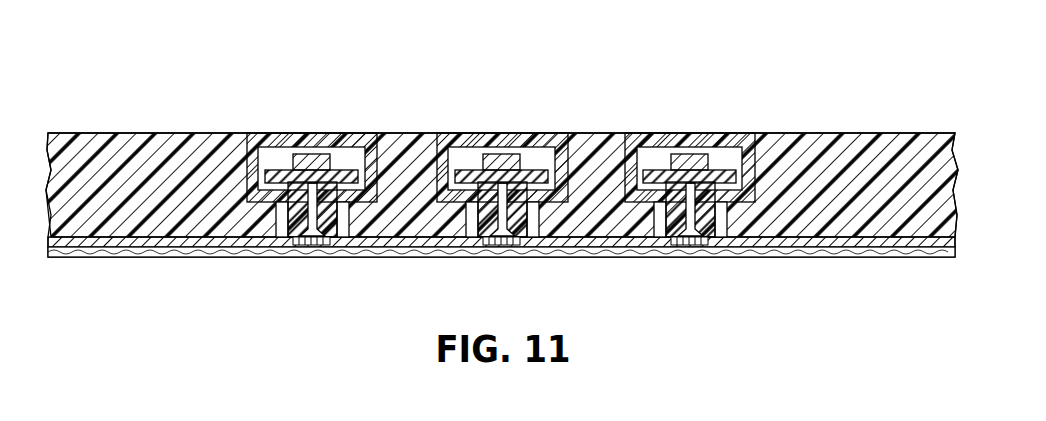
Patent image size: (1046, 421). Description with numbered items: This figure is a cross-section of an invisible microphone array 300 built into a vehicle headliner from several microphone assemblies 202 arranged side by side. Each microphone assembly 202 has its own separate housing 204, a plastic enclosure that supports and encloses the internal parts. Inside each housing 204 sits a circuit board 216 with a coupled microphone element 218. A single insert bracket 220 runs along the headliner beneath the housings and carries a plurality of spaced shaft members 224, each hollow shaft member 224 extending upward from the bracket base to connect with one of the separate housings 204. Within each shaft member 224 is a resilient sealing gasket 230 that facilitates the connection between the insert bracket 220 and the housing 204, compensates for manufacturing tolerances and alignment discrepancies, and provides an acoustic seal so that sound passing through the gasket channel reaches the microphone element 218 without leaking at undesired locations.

The invisible microphone array 300 is at (708, 50).
The microphone assembly 202 is at (302, 128).
The housing 204 is at (247, 148).
The circuit board 216 is at (277, 172).
The microphone element 218 is at (313, 154).
The insert bracket 220 is at (387, 246).
The shaft member 224 is at (268, 226).
The sealing gasket 230 is at (297, 216).